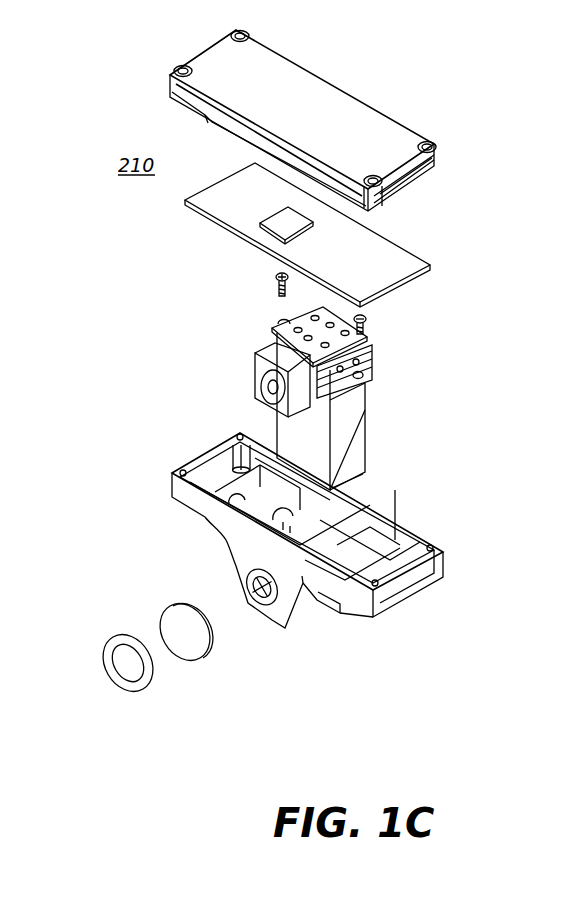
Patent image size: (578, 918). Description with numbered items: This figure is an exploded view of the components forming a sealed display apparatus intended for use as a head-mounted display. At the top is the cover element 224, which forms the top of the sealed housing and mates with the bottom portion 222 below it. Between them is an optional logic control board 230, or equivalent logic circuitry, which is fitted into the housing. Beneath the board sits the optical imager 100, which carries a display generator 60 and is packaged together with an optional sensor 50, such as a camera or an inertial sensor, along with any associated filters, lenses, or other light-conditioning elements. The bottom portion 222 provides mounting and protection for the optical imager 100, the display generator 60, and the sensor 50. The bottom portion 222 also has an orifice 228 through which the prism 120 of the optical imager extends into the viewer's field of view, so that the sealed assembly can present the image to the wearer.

The cover element 224 is at (410, 128).
The logic control board 230 is at (410, 258).
The display generator 60 is at (271, 340).
The sensor 50 is at (273, 387).
The optical imager 100 is at (275, 384).
The prism 120 is at (370, 457).
The orifice 228 is at (330, 555).
The bottom portion 222 is at (400, 597).